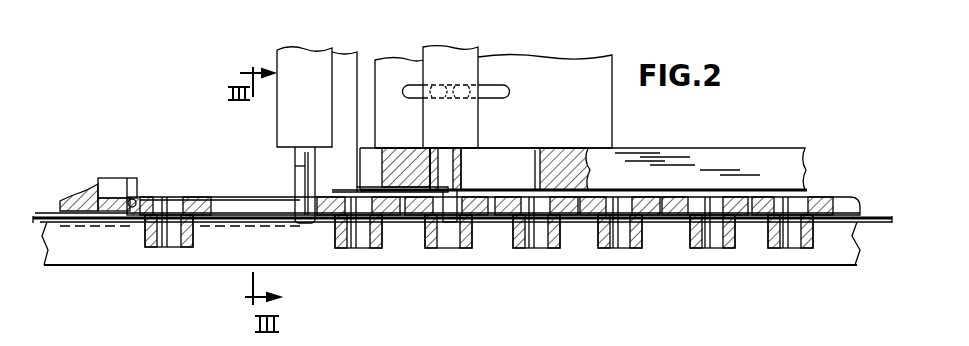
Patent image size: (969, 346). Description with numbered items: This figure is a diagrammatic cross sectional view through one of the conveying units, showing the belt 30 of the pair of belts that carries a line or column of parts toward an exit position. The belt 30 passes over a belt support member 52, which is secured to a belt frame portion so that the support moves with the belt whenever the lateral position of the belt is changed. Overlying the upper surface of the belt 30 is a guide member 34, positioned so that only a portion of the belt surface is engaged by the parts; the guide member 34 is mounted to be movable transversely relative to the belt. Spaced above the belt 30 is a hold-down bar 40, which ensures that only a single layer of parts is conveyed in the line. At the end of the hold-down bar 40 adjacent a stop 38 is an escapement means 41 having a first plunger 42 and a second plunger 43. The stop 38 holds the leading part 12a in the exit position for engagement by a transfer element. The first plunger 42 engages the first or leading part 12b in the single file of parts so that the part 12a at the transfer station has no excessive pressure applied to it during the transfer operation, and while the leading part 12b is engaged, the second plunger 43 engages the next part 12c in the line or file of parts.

The belt 30 is at (878, 218).
The guide member 34 is at (840, 205).
The stop 38 is at (112, 199).
The hold-down bar 40 is at (675, 166).
The escapement means 41 is at (496, 44).
The first plunger 42 is at (300, 166).
The second plunger 43 is at (458, 166).
The belt support member 52 is at (773, 262).
The leading part 12a is at (185, 248).
The first or leading part in the single file 12b is at (378, 248).
The next part 12c is at (470, 248).